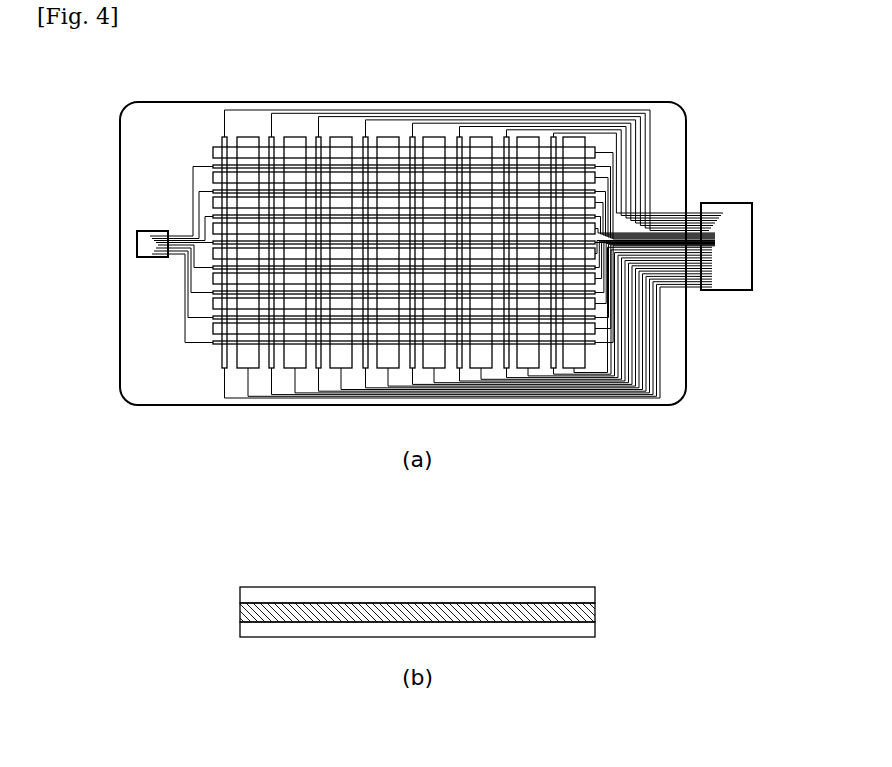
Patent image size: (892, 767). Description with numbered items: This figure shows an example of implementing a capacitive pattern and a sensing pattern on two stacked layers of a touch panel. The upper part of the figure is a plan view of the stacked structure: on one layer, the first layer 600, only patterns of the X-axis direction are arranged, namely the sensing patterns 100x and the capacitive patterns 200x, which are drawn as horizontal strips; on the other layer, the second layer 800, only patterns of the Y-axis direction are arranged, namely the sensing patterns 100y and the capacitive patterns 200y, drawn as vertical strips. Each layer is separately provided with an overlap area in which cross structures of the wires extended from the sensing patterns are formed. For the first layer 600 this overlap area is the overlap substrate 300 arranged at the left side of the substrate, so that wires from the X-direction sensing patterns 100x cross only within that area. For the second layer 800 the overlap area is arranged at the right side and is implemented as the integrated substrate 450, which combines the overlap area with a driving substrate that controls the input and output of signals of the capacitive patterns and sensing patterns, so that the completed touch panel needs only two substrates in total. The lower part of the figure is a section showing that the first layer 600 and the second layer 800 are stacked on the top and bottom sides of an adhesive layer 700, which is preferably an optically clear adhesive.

The sensing pattern 100y is at (223, 138).
The capacitive pattern 200y is at (246, 138).
The sensing pattern 100x is at (215, 345).
The capacitive pattern 200x is at (213, 328).
The overlap substrate 300 is at (150, 231).
The integrated substrate 450 is at (731, 203).
The first layer 600 is at (592, 595).
The adhesive layer 700 is at (592, 613).
The second layer 800 is at (592, 630).